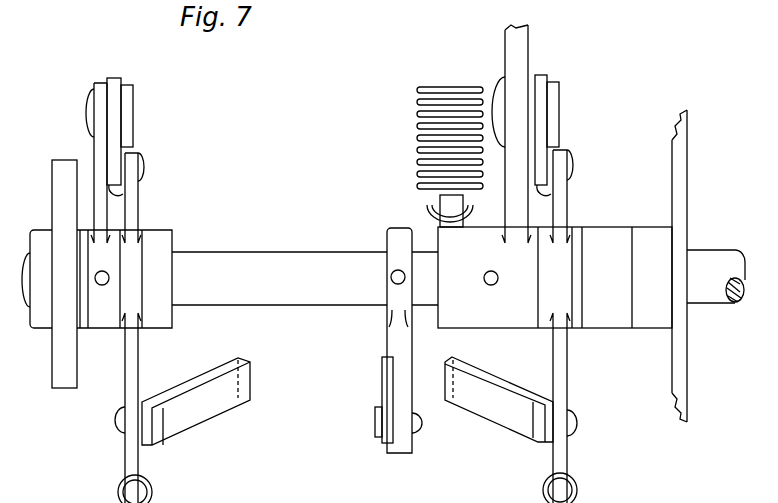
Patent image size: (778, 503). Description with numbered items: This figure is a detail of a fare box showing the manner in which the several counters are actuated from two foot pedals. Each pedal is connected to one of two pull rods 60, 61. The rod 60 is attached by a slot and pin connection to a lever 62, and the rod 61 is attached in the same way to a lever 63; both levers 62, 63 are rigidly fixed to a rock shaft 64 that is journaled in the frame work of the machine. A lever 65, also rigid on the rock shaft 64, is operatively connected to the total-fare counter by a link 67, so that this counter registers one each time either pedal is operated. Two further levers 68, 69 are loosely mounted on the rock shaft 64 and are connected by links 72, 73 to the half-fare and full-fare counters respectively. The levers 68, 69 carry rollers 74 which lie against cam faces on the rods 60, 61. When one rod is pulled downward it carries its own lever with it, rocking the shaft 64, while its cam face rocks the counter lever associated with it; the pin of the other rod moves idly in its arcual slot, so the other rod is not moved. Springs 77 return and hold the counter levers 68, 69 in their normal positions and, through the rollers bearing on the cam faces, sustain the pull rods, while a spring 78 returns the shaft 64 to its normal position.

The pull rod 60 is at (113, 90).
The pull rod 61 is at (544, 80).
The lever 62 is at (97, 96).
The lever 63 is at (520, 42).
The rock shaft 64 is at (252, 258).
The lever 65 is at (402, 347).
The link 67 is at (385, 378).
The lever 68 is at (137, 378).
The lever 69 is at (565, 374).
The link 72 is at (205, 407).
The link 73 is at (495, 405).
The roller 74 is at (118, 196).
The spring 77 is at (152, 492).
The spring 78 is at (418, 125).